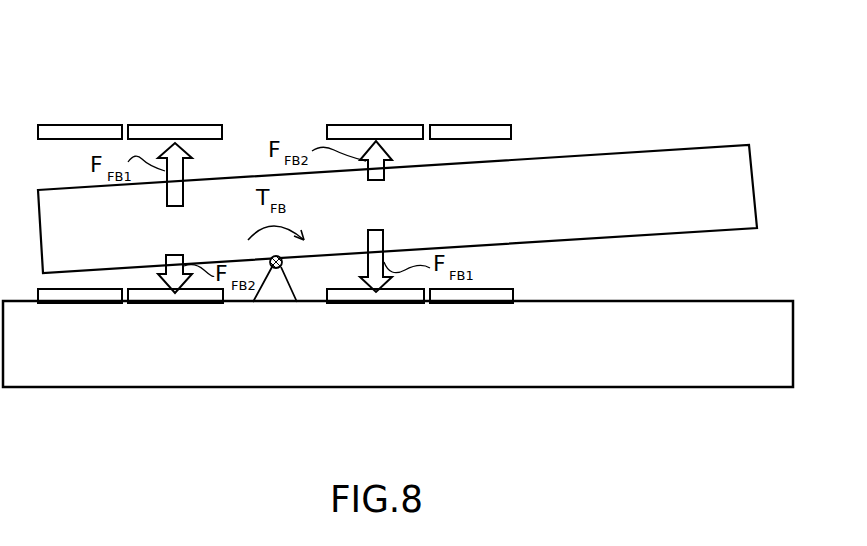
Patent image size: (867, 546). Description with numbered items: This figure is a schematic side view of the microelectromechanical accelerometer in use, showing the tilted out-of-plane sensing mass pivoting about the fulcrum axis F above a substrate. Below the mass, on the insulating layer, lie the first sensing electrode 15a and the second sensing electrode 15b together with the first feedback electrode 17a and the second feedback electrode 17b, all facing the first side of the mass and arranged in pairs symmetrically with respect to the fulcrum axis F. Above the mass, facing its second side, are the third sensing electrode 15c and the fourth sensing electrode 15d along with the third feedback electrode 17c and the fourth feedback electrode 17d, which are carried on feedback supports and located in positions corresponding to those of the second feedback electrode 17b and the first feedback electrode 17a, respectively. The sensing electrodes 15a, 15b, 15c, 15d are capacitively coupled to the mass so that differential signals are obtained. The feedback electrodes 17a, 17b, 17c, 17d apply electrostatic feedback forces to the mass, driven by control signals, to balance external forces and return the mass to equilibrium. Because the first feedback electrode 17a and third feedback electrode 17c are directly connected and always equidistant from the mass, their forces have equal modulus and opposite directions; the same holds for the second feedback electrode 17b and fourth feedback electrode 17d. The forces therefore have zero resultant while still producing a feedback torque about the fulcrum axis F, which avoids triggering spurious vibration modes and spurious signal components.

The first sensing electrode 15a is at (74, 296).
The second sensing electrode 15b is at (472, 296).
The third sensing electrode 15c is at (74, 132).
The fourth sensing electrode 15d is at (472, 132).
The first feedback electrode 17a is at (178, 296).
The second feedback electrode 17b is at (365, 296).
The third feedback electrode 17c is at (180, 132).
The fourth feedback electrode 17d is at (365, 132).
The fulcrum axis F is at (277, 270).